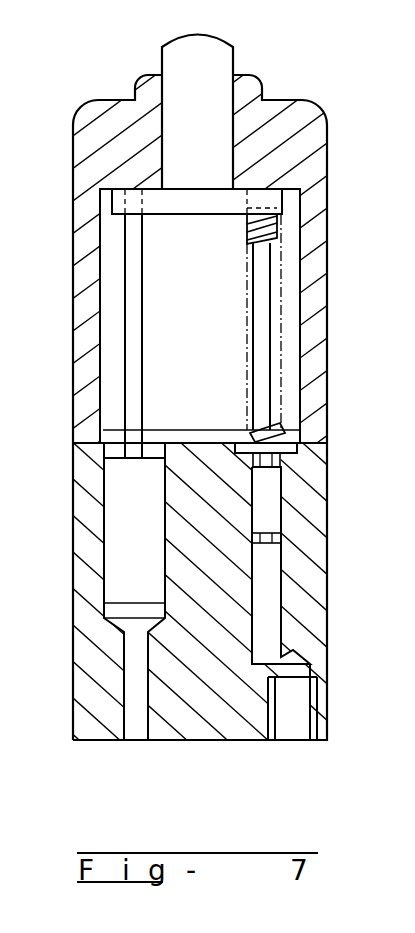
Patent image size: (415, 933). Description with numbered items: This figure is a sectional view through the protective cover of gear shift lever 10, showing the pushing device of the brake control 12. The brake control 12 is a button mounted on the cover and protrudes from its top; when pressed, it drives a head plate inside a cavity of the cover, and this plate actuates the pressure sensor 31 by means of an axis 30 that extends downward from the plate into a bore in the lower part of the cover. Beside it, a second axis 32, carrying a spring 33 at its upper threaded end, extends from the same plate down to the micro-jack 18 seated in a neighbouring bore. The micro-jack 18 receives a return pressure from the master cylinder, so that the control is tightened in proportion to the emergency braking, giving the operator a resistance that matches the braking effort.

The protective cover of gear shift lever 10 is at (93, 695).
The brake control 12 is at (182, 70).
The micro-jack 18 is at (267, 593).
The axis 30 is at (128, 343).
The pressure sensor 31 is at (118, 527).
The second axis 32 is at (270, 333).
The spring 33 is at (279, 240).